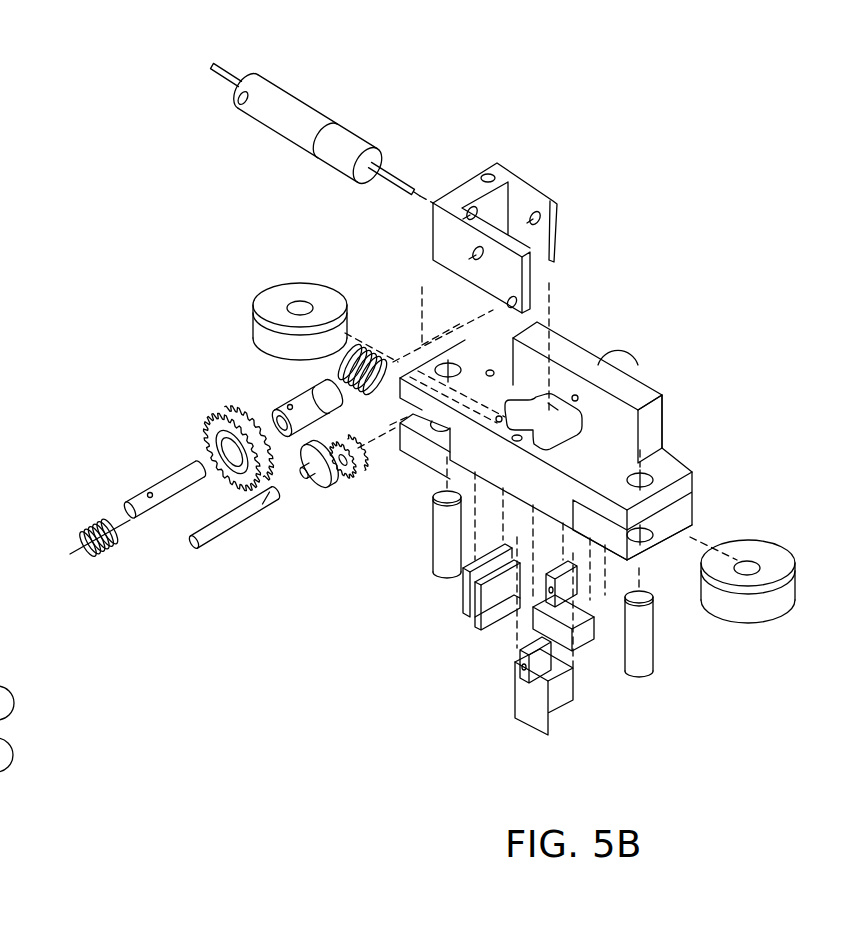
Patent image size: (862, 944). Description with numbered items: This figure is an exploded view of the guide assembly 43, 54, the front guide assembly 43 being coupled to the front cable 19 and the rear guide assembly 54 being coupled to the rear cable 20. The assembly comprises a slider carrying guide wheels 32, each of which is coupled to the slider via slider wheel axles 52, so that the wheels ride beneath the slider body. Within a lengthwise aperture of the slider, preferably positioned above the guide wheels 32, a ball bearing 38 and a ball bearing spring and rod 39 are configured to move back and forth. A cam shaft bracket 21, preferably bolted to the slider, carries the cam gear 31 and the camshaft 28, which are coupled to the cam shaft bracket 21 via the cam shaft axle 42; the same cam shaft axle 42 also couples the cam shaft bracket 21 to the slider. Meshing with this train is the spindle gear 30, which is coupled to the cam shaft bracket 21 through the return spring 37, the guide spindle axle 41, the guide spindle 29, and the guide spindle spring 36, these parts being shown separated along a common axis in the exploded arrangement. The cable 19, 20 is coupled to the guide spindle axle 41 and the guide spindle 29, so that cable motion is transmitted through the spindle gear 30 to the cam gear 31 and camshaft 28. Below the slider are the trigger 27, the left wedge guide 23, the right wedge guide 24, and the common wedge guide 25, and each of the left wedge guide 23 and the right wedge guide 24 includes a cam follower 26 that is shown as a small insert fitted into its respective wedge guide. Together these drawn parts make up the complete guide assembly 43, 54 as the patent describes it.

The front cable 19 is at (392, 167).
The rear cable 20 is at (359, 129).
The cam shaft bracket 21 is at (517, 170).
The left wedge guide 23 is at (525, 730).
The right wedge guide 24 is at (583, 655).
The common wedge guide 25 is at (478, 633).
The cam follower 26 is at (537, 598).
The trigger 27 is at (457, 600).
The camshaft 28 is at (353, 487).
The guide spindle 29 is at (293, 395).
The spindle gear 30 is at (222, 408).
The cam gear 31 is at (337, 490).
The guide wheels 32 is at (765, 623).
The guide spindle spring 36 is at (358, 352).
The return spring 37 is at (85, 512).
The ball bearing 38 is at (424, 368).
The ball bearing spring and rod 39 is at (480, 405).
The guide spindle axle 41 is at (155, 480).
The cam shaft axle 42 is at (233, 537).
The front guide assembly 43 is at (642, 374).
The slider wheel axles 52 is at (433, 547).
The rear guide assembly 54 is at (657, 383).